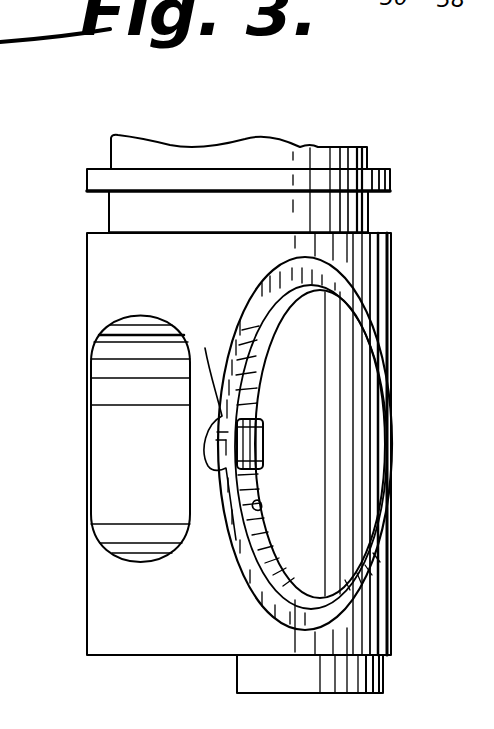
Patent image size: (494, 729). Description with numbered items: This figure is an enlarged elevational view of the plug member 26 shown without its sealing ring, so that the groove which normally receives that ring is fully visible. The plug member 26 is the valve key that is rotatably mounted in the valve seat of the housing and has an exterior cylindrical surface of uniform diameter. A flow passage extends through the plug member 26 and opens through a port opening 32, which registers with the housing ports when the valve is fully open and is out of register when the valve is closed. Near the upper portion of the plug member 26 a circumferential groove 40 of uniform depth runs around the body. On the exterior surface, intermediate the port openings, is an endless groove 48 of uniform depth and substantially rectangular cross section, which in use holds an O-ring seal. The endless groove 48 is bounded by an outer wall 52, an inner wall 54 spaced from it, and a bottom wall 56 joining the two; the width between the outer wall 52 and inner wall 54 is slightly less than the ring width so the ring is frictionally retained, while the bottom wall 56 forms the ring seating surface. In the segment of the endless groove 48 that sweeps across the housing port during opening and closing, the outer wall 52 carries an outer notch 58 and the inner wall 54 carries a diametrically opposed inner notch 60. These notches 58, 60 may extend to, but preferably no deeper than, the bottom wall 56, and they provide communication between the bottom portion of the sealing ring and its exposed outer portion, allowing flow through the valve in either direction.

The plug member 26 is at (395, 620).
The port opening 32 is at (110, 408).
The circumferential groove 40 is at (367, 214).
The endless groove 48 is at (347, 287).
The outer wall 52 is at (237, 552).
The inner wall 54 is at (258, 507).
The bottom wall 56 is at (268, 598).
The outer notch 58 is at (208, 428).
The inner notch 60 is at (260, 445).